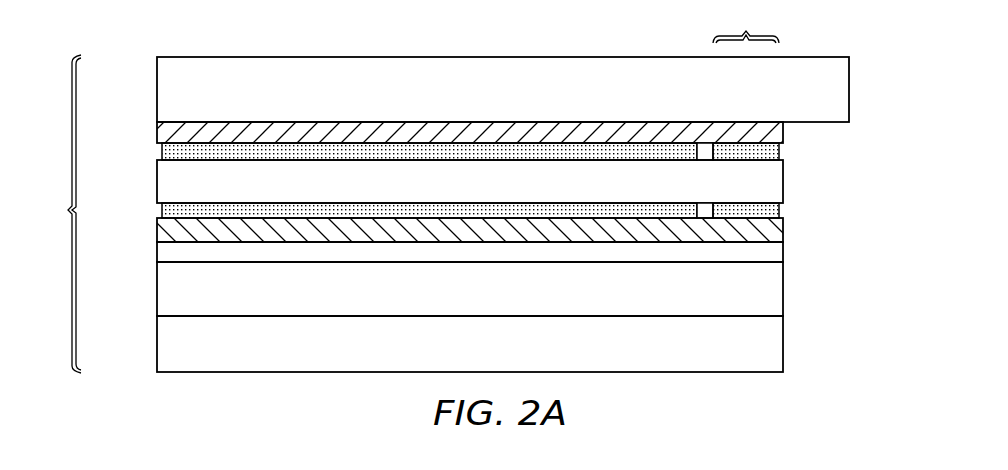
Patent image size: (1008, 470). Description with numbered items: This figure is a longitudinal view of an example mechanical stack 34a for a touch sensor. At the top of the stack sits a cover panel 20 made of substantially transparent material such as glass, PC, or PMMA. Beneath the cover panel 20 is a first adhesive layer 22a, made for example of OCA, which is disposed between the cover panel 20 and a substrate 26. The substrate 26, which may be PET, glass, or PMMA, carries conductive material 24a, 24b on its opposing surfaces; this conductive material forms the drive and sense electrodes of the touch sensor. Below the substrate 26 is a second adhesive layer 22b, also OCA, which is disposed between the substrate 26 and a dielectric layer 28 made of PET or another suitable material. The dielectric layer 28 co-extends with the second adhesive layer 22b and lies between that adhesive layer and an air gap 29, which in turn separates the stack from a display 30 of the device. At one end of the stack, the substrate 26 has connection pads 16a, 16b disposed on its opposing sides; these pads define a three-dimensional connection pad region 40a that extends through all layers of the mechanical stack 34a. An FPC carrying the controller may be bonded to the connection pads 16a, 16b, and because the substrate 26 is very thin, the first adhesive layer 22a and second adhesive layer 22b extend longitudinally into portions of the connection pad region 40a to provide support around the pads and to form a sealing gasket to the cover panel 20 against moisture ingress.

The cover panel 20 is at (157, 87).
The first adhesive layer 22a is at (157, 130).
The conductive material 24a is at (162, 151).
The connection pad 16a is at (783, 151).
The substrate 26 is at (157, 183).
The conductive material 24b is at (162, 211).
The connection pad 16b is at (783, 208).
The second adhesive layer 22b is at (783, 228).
The dielectric layer 28 is at (783, 251).
The air gap 29 is at (783, 290).
The display 30 is at (783, 343).
The mechanical stack 34a is at (53, 214).
The connection pad region 40a is at (746, 24).